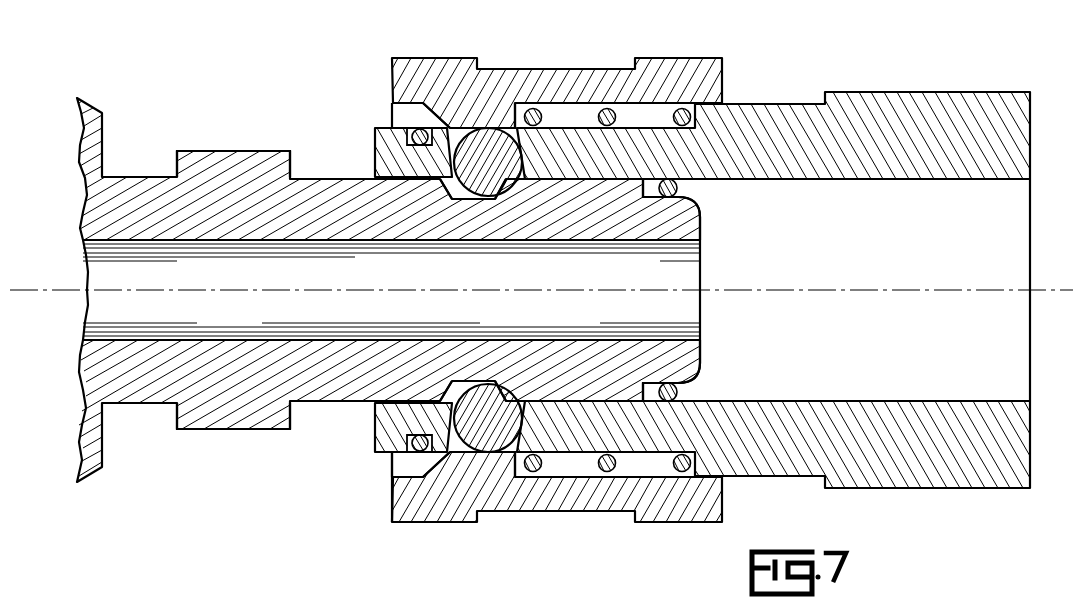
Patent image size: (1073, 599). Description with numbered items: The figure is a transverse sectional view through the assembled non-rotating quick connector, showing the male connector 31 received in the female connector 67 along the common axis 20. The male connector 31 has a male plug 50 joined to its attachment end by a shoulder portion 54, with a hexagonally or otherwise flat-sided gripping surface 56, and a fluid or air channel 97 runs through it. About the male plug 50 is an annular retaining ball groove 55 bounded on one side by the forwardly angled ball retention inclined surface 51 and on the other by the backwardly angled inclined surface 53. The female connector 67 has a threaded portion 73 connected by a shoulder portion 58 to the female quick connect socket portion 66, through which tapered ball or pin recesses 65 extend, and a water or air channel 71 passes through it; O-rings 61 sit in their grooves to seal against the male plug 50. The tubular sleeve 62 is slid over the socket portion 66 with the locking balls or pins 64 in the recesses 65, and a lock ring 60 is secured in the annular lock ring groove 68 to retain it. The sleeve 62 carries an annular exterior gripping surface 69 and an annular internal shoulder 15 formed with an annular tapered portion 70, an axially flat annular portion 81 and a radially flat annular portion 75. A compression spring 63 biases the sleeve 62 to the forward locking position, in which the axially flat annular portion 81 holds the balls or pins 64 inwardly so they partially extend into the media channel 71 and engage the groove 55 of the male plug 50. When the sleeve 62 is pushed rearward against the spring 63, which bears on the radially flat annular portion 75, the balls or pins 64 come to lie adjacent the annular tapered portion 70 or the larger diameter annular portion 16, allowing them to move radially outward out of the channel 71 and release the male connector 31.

The annular internal shoulder 15 is at (433, 100).
The larger diameter annular portion 16 is at (395, 473).
The axis 20 is at (886, 290).
The male connector 31 is at (95, 375).
The male plug 50 is at (582, 398).
The forwardly angled ball retention inclined surface 51 is at (500, 202).
The backwardly angled inclined surface 53 is at (444, 201).
The shoulder portion 54 is at (313, 402).
The annular retaining ball groove 55 is at (470, 202).
The gripping surface 56 is at (227, 430).
The shoulder portion 58 is at (762, 104).
The lock ring 60 is at (415, 131).
The O-rings 61 is at (682, 190).
The tubular sleeve 62 is at (612, 515).
The compression spring 63 is at (682, 107).
The locking balls or pins 64 is at (500, 404).
The tapered ball or pin recesses 65 is at (450, 130).
The female quick connect socket portion 66 is at (375, 430).
The female connector 67 is at (864, 490).
The annular lock ring groove 68 is at (412, 438).
The annular exterior gripping surface 69 is at (402, 520).
The annular tapered portion 70 is at (441, 105).
The media channel 71 is at (958, 228).
The threaded portion 73 is at (985, 401).
The radially flat annular portion 75 is at (511, 118).
The axially flat annular portion 81 is at (483, 130).
The fluid or air channel 97 is at (142, 310).